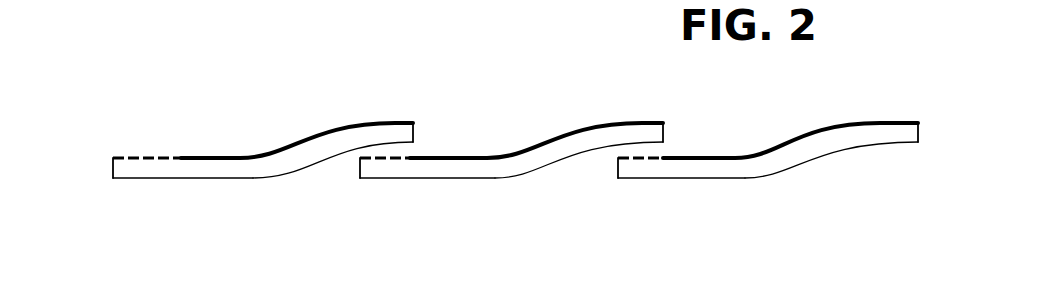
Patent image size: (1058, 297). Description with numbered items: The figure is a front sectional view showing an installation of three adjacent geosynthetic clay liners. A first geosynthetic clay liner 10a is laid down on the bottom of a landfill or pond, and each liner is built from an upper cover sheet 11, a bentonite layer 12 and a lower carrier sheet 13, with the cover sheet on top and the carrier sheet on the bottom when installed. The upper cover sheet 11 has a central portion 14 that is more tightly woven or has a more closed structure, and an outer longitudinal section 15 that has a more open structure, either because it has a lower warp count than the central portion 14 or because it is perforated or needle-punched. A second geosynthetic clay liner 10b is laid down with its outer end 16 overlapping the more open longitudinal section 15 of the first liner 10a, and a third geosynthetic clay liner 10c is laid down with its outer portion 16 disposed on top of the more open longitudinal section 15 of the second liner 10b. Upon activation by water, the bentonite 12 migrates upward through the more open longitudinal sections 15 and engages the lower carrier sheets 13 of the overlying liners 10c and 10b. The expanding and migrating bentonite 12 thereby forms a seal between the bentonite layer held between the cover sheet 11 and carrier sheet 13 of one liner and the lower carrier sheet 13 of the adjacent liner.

The first geosynthetic clay liner 10a is at (820, 112).
The second geosynthetic clay liner 10b is at (538, 126).
The third geosynthetic clay liner 10c is at (214, 132).
The upper cover sheet 11 is at (176, 150).
The bentonite layer 12 is at (160, 170).
The lower carrier sheet 13 is at (221, 189).
The central portion 14 is at (290, 143).
The outer longitudinal section 15 is at (132, 158).
The outer end 16 is at (397, 141).